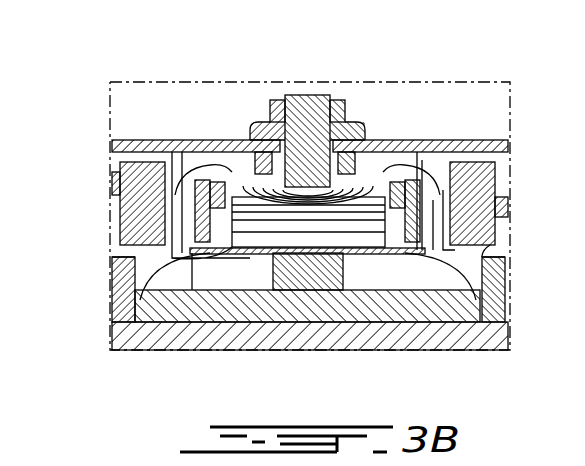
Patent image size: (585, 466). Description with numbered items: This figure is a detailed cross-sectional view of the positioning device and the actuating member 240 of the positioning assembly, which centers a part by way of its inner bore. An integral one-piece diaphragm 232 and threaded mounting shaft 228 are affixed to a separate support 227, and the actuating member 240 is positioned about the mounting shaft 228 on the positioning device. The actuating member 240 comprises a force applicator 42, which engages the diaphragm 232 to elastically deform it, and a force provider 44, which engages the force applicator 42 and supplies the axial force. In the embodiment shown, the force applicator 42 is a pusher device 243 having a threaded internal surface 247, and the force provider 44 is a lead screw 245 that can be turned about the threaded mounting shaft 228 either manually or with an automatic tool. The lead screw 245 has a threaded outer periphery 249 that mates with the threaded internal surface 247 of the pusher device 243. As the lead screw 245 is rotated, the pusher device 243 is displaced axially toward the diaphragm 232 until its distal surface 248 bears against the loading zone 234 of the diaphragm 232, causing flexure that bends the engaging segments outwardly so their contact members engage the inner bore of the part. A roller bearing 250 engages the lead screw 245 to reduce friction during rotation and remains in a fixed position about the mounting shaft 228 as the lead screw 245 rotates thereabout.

The support 227 is at (468, 305).
The threaded mounting shaft 228 is at (312, 118).
The diaphragm 232 is at (243, 248).
The loading zone 234 is at (417, 256).
The actuating member 240 is at (350, 168).
The pusher device 243 is at (413, 254).
The lead screw 245 is at (366, 222).
The threaded internal surface 247 is at (415, 185).
The distal surface 248 is at (210, 253).
The threaded outer periphery 249 is at (172, 187).
The roller bearing 250 is at (263, 162).
The force applicator 42 is at (198, 229).
The force provider 44 is at (258, 143).